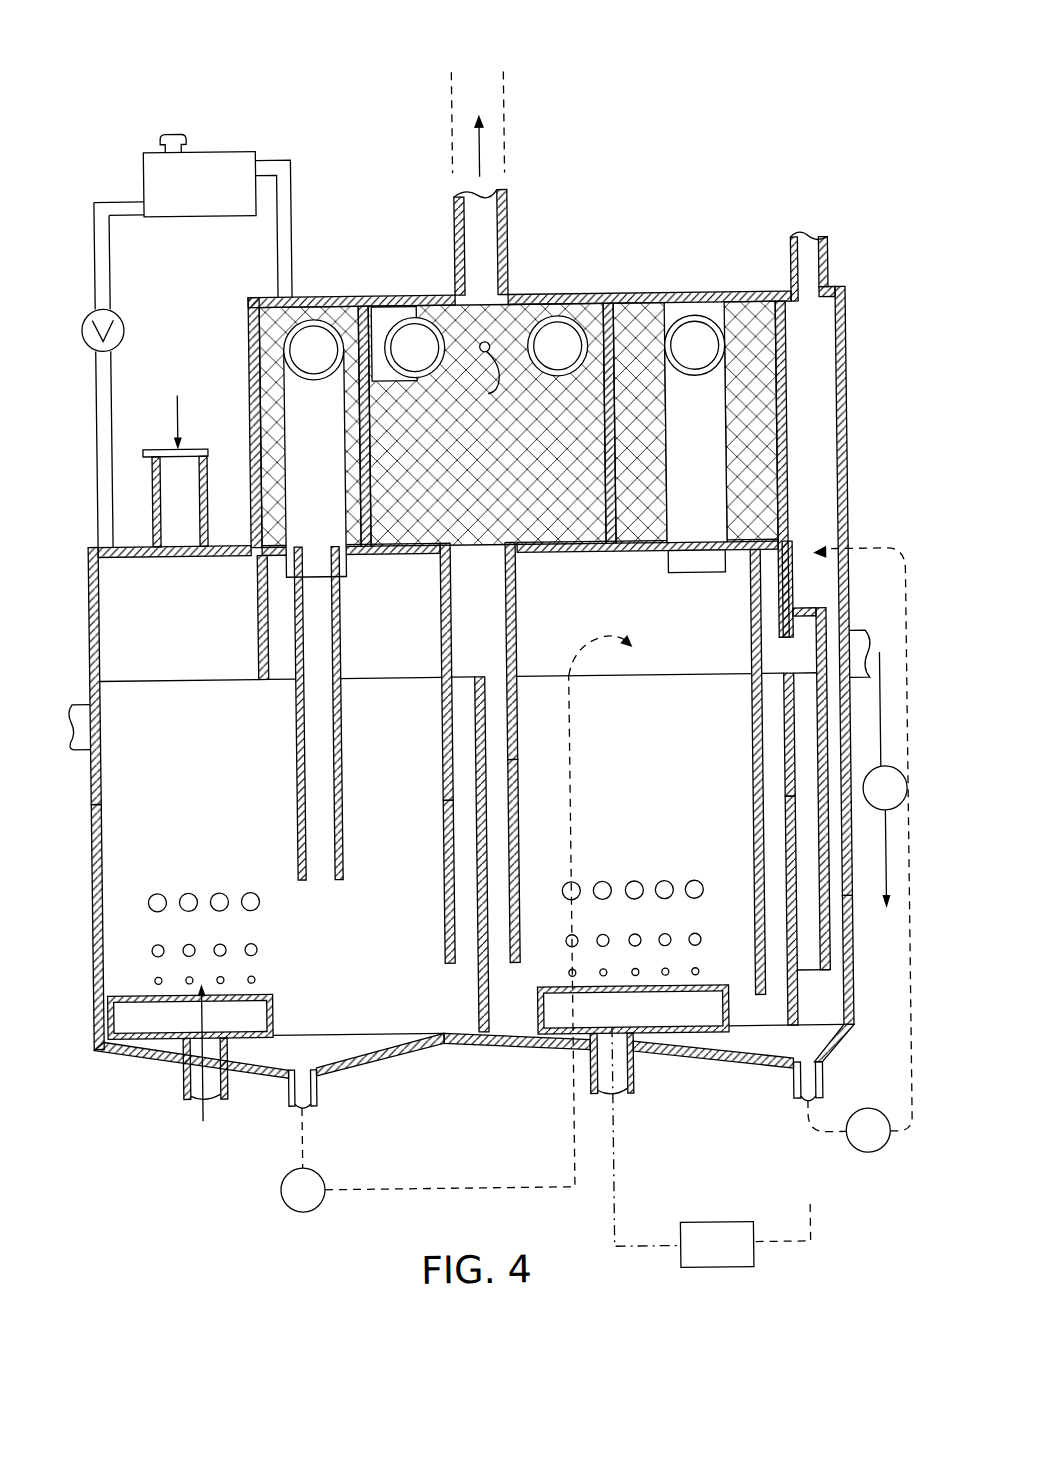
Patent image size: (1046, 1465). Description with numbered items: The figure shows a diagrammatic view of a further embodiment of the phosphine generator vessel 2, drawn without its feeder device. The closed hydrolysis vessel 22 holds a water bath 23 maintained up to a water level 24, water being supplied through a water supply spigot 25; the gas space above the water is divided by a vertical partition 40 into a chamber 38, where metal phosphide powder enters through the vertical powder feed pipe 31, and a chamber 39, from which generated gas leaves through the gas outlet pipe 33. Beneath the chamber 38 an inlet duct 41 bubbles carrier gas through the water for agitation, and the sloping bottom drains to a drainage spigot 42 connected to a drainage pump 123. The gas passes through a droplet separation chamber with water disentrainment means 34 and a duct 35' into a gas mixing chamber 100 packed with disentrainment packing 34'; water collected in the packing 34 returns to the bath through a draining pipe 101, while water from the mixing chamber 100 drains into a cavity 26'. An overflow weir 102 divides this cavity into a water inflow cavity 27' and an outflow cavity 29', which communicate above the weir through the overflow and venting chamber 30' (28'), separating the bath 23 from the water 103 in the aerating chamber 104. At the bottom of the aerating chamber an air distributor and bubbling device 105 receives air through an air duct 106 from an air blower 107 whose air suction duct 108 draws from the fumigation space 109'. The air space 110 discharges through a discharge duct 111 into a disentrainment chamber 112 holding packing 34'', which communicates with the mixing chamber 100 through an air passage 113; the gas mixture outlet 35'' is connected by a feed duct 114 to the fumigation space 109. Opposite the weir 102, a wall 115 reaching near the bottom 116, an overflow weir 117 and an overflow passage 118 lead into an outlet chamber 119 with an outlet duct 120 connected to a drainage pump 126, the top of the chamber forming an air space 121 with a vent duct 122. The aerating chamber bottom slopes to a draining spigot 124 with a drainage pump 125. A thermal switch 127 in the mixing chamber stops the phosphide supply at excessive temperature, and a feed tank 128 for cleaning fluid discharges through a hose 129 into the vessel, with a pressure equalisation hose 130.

The generator vessel 2 is at (90, 836).
The closed vessel 22 is at (88, 633).
The water 23 is at (203, 886).
The water level 24 is at (165, 682).
The water supply spigot 25 is at (75, 713).
The cavity 26' is at (419, 672).
The water inflow cavity 27' is at (436, 855).
The overflow and venting chamber 28' is at (582, 641).
The outflow cavity 29' is at (531, 861).
The overflow and venting chamber 30' is at (529, 651).
The powder feed pipe 31 is at (152, 523).
The gas outlet pipe 33 is at (302, 430).
The water disentrainment means 34 is at (286, 427).
The water disentrainment packing 34' is at (486, 394).
The droplet separator packing 34'' is at (639, 392).
The duct 35' is at (408, 372).
The gas mixture outlet 35'' is at (456, 243).
The gas chamber 38 is at (175, 586).
The gas chamber 39 is at (351, 583).
The vertical partition 40 is at (257, 592).
The inlet duct for carrier gas 41 is at (190, 1082).
The water and sludge drainage spigot 42 is at (320, 1088).
The gas mixing chamber 100 is at (521, 467).
The draining pipe 101 is at (296, 740).
The overflow weir 102 is at (455, 920).
The water 103 is at (632, 881).
The aerating chamber 104 is at (752, 618).
The air distributor and bubbling device 105 is at (550, 1045).
The air duct 106 is at (614, 1200).
The air blower 107 is at (717, 1245).
The air suction duct 108 is at (812, 1230).
The fumigation space 109 is at (478, 104).
The fumigation space 109' is at (810, 1191).
The air space 110 is at (648, 567).
The discharge duct 111 is at (690, 340).
The disentrainment chamber 112 is at (752, 318).
The air passage 113 is at (557, 378).
The feed duct 114 is at (486, 142).
The wall 115 is at (765, 774).
The bottom of the aerating chamber 116 is at (672, 1060).
The overflow weir 117 is at (782, 722).
The overflow passage 118 is at (833, 934).
The outlet chamber 119 is at (838, 953).
The outlet duct 120 is at (866, 635).
The air space 121 is at (812, 370).
The vent duct 122 is at (833, 252).
The drainage pump 123 is at (282, 1205).
The draining spigot 124 is at (864, 548).
The drainage pump 125 is at (867, 1157).
The drainage pump 126 is at (884, 780).
The thermal switch 127 is at (500, 379).
The feed tank for cleaning fluid 128 is at (221, 174).
The hose 129 is at (107, 256).
The pressure equalisation hose 130 is at (291, 222).